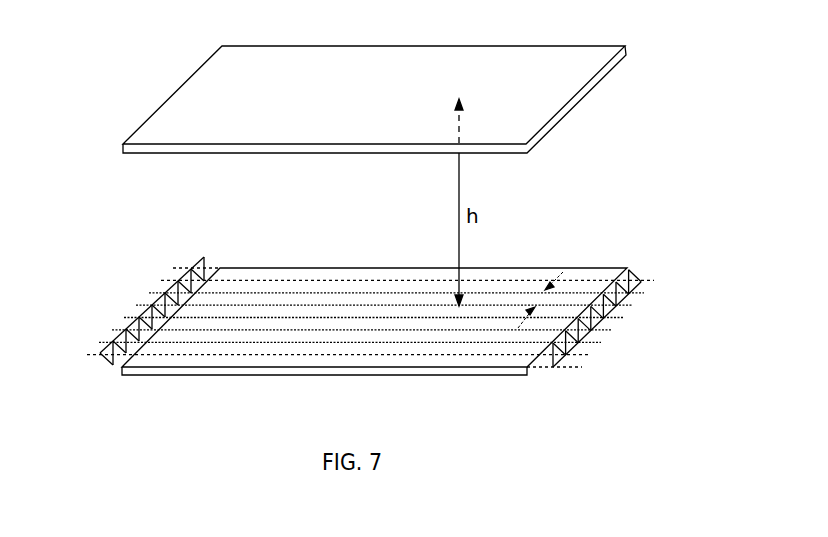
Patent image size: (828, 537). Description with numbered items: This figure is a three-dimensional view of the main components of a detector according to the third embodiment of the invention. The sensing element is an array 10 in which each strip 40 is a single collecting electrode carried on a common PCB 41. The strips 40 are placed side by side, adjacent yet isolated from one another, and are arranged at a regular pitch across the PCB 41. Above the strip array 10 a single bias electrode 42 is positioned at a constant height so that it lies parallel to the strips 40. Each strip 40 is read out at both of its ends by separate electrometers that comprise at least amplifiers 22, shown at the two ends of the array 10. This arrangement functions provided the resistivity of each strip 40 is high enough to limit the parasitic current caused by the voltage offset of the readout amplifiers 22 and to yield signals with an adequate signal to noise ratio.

The array 10 is at (168, 312).
The amplifiers 22 is at (200, 262).
The strip 40 is at (312, 275).
The common PCB 41 is at (168, 373).
The bias electrode 42 is at (217, 86).